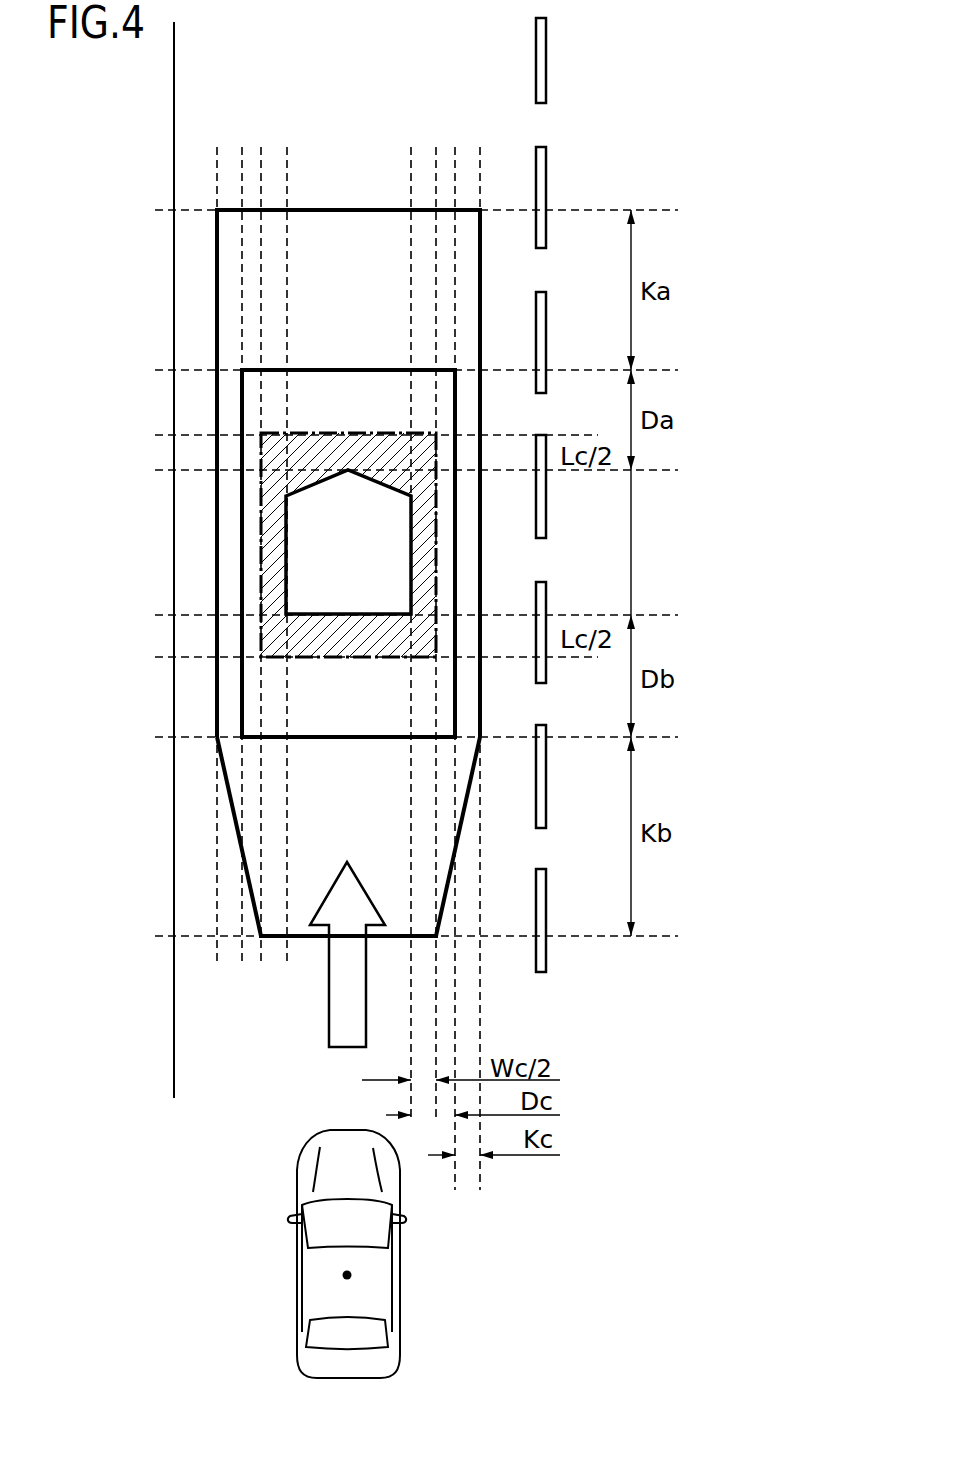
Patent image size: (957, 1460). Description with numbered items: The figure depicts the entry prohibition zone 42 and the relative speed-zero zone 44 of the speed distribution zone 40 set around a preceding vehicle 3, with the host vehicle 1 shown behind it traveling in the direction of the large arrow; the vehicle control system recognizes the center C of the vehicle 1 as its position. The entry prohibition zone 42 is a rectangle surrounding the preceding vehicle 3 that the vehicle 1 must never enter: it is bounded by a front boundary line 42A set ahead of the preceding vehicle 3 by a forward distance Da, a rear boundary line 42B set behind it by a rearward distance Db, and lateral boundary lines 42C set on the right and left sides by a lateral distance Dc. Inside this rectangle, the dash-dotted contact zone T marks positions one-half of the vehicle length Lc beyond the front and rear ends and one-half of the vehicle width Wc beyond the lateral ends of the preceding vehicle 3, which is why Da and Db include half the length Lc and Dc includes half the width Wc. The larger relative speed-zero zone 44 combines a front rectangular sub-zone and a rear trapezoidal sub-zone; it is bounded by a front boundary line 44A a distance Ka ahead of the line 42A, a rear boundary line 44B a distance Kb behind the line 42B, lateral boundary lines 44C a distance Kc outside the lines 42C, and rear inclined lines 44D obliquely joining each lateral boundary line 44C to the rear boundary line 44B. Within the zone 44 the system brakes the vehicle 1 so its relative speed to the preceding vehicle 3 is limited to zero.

The speed distribution zone 40 is at (342, 200).
The relative speed-zero zone 44 is at (307, 209).
The front boundary line 44A is at (385, 209).
The rear boundary line 44B is at (272, 937).
The lateral boundary lines 44C is at (217, 556).
The rear inclined lines 44D is at (237, 823).
The entry prohibition zone 42 is at (315, 369).
The front boundary line 42A is at (375, 369).
The rear boundary line 42B is at (370, 739).
The lateral boundary lines 42C is at (242, 458).
The contact zone T is at (312, 432).
The preceding vehicle 3 is at (392, 552).
The vehicle 1 is at (327, 1297).
The center C is at (351, 1275).